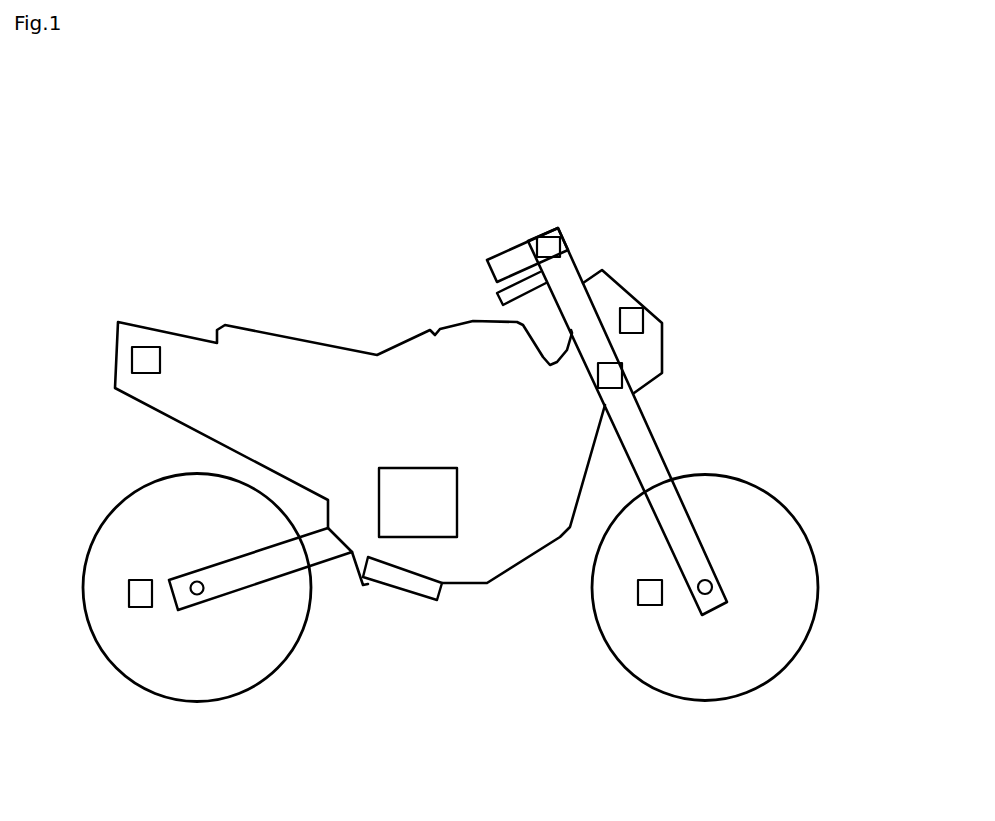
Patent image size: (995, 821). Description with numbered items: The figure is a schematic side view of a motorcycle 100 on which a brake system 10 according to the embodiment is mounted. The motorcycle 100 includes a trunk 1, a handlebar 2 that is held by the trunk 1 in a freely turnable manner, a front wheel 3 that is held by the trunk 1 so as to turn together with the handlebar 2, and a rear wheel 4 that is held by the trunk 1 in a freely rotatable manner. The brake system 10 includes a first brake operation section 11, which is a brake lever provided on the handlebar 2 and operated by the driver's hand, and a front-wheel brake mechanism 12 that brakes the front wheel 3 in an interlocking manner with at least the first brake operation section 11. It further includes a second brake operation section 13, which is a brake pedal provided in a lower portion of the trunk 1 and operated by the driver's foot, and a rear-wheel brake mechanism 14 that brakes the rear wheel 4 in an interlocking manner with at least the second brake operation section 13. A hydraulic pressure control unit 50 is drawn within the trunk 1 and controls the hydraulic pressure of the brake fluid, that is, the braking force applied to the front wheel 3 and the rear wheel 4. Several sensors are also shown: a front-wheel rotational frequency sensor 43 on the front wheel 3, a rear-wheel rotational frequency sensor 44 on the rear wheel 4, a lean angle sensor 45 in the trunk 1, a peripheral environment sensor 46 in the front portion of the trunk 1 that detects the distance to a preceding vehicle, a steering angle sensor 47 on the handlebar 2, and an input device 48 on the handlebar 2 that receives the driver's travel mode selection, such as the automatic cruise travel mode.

The motorcycle 100 is at (804, 94).
The trunk 1 is at (291, 357).
The handlebar 2 is at (500, 263).
The front wheel 3 is at (707, 713).
The rear wheel 4 is at (197, 713).
The brake system 10 is at (693, 398).
The first brake operation section 11 is at (498, 294).
The front-wheel brake mechanism 12 is at (722, 557).
The second brake operation section 13 is at (415, 583).
The rear-wheel brake mechanism 14 is at (178, 568).
The front-wheel rotational frequency sensor 43 is at (650, 590).
The rear-wheel rotational frequency sensor 44 is at (130, 593).
The lean angle sensor 45 is at (143, 355).
The peripheral environment sensor 46 is at (632, 318).
The steering angle sensor 47 is at (613, 373).
The input device 48 is at (552, 245).
The hydraulic pressure control unit 50 is at (402, 467).